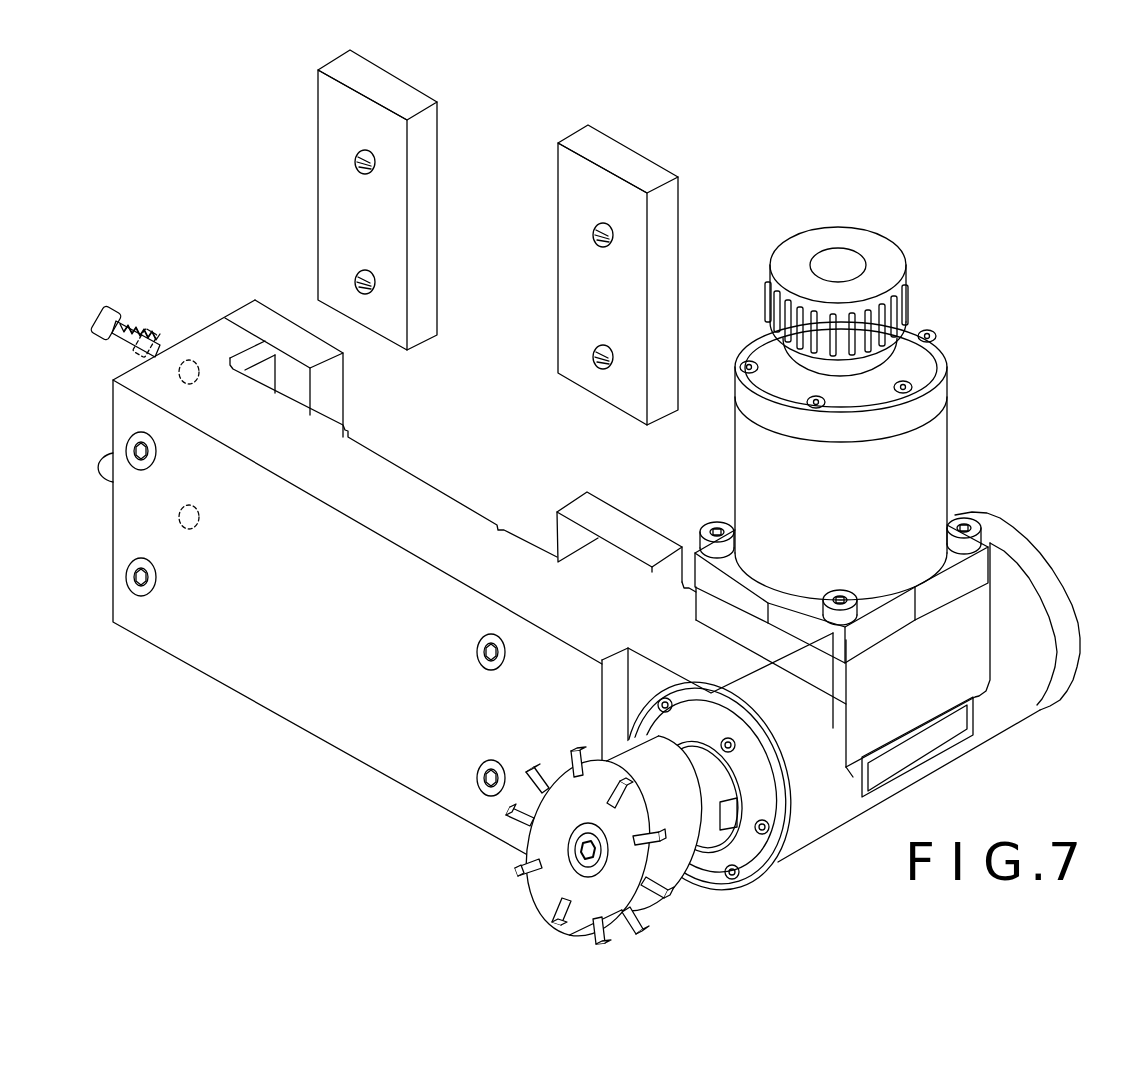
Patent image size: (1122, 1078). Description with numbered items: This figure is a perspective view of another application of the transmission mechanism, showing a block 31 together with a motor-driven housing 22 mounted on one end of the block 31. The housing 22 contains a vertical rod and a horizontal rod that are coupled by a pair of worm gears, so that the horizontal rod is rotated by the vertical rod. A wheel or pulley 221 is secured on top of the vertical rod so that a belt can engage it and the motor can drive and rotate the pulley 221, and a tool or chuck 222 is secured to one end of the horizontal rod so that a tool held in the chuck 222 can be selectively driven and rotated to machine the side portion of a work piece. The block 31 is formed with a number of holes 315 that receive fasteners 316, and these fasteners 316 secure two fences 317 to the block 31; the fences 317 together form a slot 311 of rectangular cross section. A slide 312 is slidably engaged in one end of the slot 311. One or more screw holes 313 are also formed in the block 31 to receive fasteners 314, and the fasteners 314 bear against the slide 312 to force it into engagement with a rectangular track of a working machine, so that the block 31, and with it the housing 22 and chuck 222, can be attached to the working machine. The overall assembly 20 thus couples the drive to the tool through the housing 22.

The motor 20 is at (881, 406).
The housing 22 is at (973, 608).
The pulley 221 is at (887, 252).
The chuck 222 is at (708, 838).
The block 31 is at (379, 582).
The slot 311 is at (423, 483).
The slide 312 is at (262, 350).
The screw holes 313 is at (193, 360).
The fasteners 314 is at (108, 312).
The holes 315 is at (132, 593).
The fasteners 316 is at (143, 598).
The fences 317 is at (402, 92).